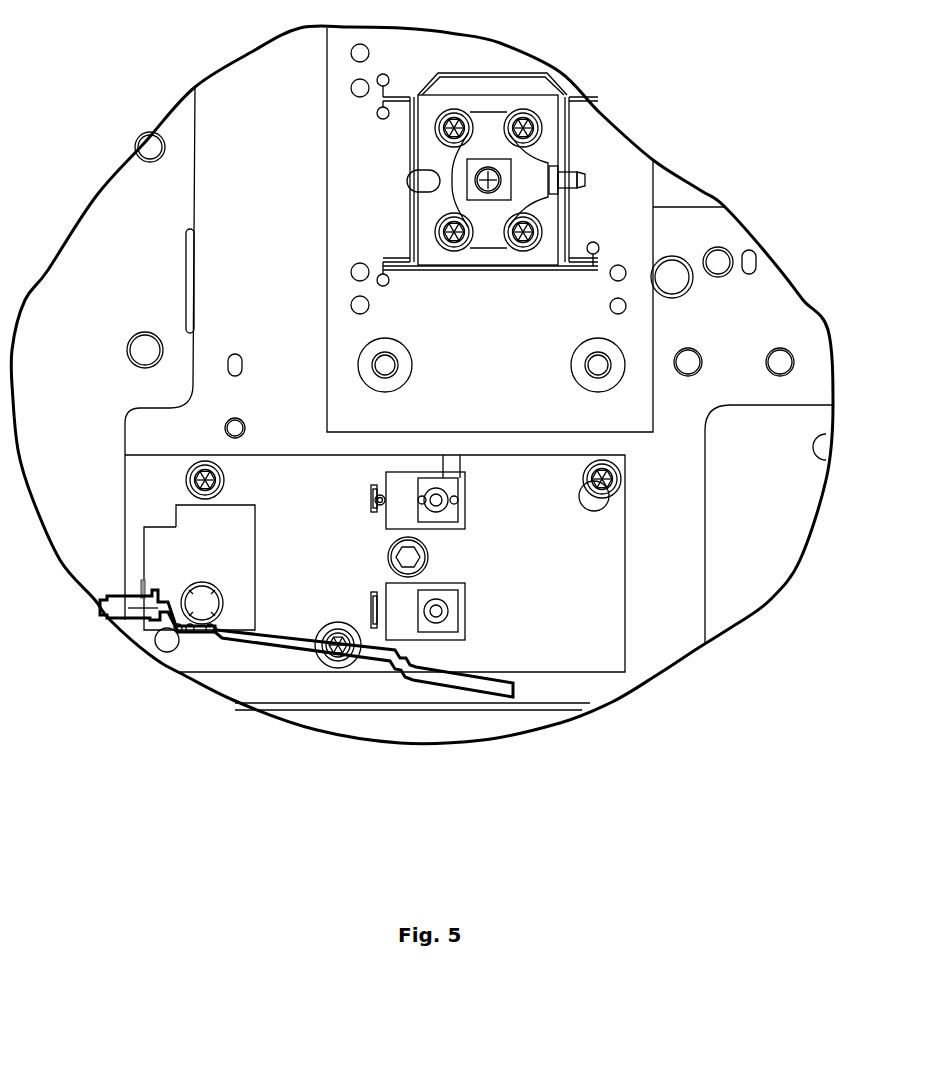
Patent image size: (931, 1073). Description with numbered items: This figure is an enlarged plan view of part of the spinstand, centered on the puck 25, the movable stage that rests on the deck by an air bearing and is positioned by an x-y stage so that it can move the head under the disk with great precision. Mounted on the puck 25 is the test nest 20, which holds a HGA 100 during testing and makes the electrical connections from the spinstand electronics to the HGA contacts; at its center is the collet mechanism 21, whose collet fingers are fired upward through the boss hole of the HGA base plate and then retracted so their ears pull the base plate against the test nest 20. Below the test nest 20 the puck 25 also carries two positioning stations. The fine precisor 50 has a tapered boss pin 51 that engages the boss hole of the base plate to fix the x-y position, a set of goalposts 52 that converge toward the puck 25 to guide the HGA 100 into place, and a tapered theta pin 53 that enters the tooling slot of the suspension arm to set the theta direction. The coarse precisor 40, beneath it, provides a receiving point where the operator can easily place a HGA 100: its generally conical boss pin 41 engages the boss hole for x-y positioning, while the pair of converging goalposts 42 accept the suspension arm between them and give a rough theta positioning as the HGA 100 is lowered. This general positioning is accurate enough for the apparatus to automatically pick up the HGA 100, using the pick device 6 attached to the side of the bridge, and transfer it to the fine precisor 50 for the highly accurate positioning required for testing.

The puck 25 is at (262, 97).
The test nest 20 is at (548, 152).
The collet mechanism 21 is at (477, 173).
The pick device 6 is at (163, 534).
The fine precisor 50 is at (498, 512).
The tapered boss pin 51 is at (436, 503).
The goalposts 52 is at (370, 487).
The tapered theta pin 53 is at (382, 507).
The coarse precisor 40 is at (498, 633).
The boss pin 41 is at (438, 612).
The goalposts 42 is at (370, 594).
The HGA 100 is at (270, 640).